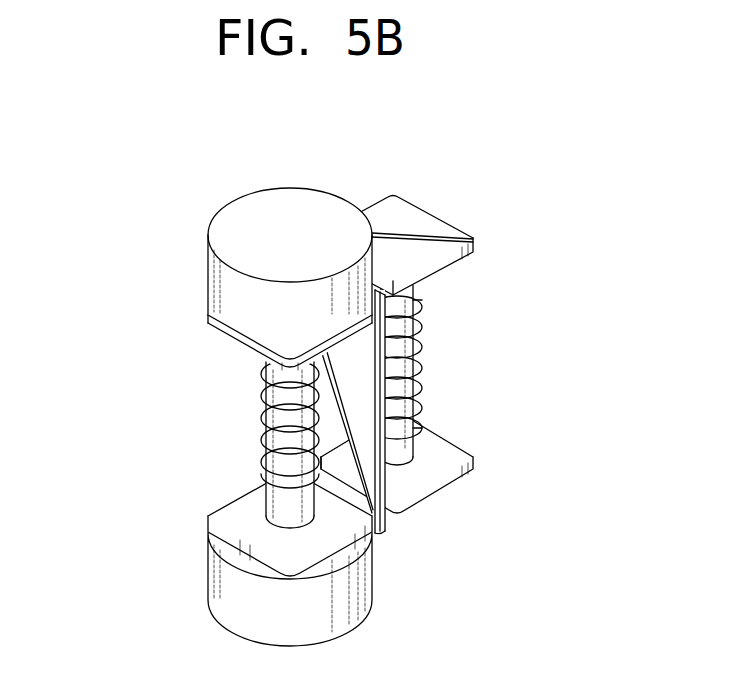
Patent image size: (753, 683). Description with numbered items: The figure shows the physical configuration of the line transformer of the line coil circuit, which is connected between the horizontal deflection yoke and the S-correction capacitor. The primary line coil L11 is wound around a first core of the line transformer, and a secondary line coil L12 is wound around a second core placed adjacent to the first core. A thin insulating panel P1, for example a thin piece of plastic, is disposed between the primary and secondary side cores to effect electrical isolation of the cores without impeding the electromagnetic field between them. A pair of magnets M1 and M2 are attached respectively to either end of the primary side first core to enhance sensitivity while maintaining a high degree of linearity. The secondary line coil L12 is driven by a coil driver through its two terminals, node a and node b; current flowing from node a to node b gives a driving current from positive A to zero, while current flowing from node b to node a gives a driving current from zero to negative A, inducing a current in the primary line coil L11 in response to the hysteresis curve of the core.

The magnet M1 is at (232, 212).
The magnet M2 is at (232, 620).
The insulating panel P1 is at (366, 338).
The primary line coil L11 is at (265, 487).
The secondary line coil L12 is at (545, 427).
The node a is at (422, 300).
The node b is at (422, 428).